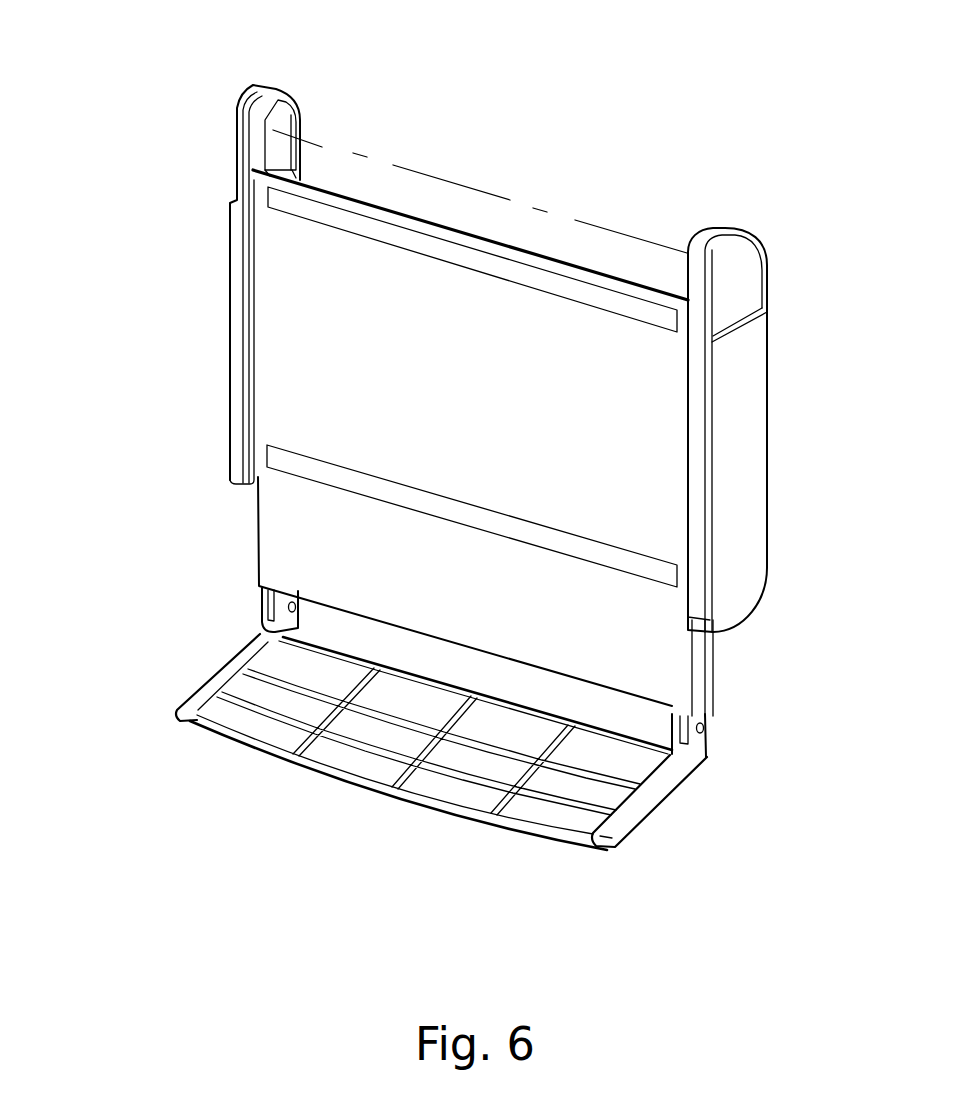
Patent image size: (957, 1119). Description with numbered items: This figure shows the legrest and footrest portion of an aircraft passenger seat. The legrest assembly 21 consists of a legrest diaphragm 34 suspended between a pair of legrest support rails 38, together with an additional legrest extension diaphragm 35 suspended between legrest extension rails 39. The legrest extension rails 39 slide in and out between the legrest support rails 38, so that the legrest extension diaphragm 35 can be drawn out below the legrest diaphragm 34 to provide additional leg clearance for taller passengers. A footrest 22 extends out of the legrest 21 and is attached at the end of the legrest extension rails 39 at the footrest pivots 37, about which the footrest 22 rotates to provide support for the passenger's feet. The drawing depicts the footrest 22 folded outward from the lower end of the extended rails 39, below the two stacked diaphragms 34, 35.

The legrest assembly 21 is at (202, 306).
The footrest 22 is at (603, 795).
The legrest diaphragm 34 is at (510, 297).
The legrest extension diaphragm 35 is at (322, 542).
The footrest pivots 37 is at (293, 600).
The legrest support rails 38 is at (228, 400).
The legrest extension rails 39 is at (497, 193).